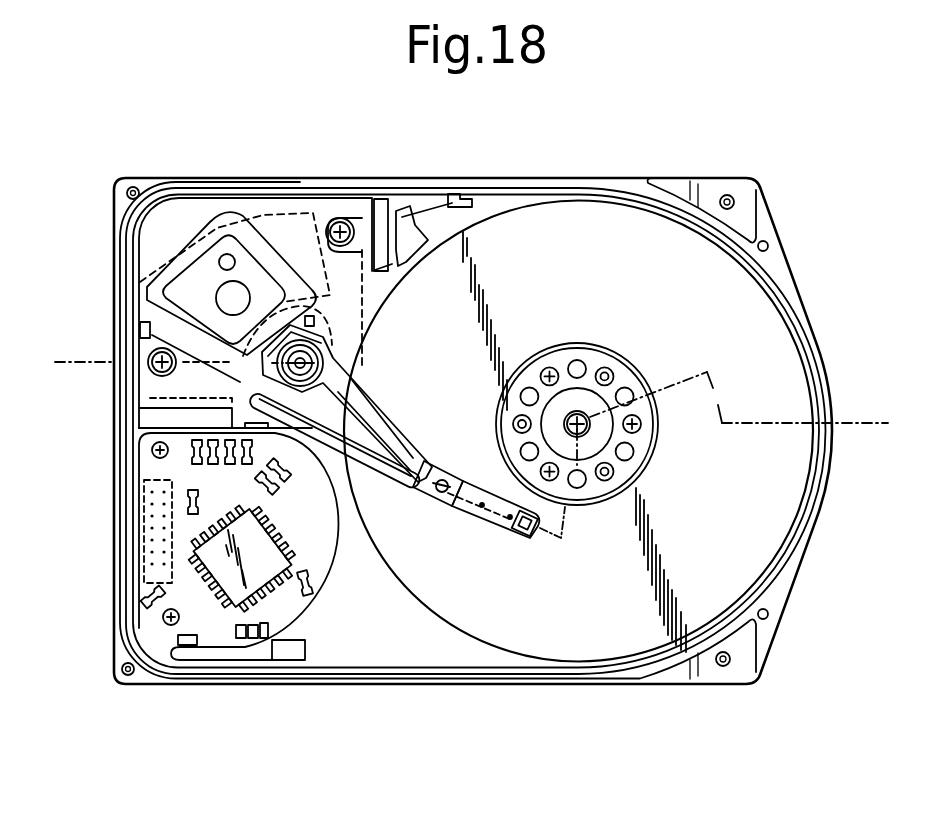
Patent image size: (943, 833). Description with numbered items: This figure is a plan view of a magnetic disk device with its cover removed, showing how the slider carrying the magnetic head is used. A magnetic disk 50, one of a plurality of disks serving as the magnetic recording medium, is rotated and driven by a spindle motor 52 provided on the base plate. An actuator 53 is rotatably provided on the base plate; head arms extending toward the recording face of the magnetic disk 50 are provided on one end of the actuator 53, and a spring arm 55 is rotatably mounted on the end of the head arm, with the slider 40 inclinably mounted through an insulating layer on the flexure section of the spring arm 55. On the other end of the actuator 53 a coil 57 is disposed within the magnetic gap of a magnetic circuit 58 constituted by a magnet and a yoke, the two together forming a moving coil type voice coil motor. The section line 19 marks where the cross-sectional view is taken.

The section line of FIG. 19 is at (873, 425).
The slider 40 is at (534, 543).
The magnetic disk 50 is at (750, 552).
The spindle motor 52 is at (607, 510).
The actuator 53 is at (386, 390).
The spring arm 55 is at (466, 510).
The coil 57 is at (215, 235).
The magnetic circuit 58 is at (302, 212).